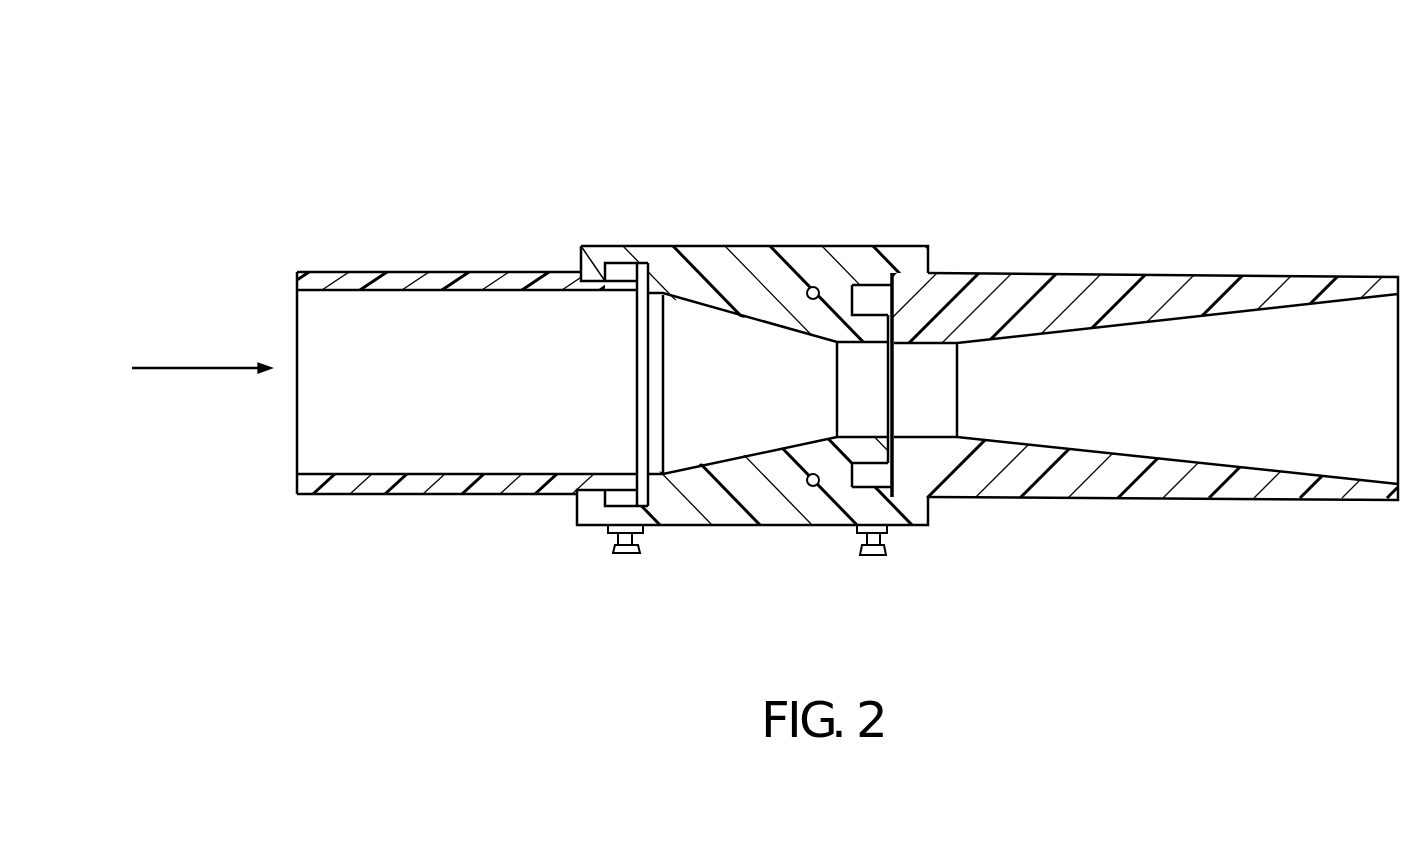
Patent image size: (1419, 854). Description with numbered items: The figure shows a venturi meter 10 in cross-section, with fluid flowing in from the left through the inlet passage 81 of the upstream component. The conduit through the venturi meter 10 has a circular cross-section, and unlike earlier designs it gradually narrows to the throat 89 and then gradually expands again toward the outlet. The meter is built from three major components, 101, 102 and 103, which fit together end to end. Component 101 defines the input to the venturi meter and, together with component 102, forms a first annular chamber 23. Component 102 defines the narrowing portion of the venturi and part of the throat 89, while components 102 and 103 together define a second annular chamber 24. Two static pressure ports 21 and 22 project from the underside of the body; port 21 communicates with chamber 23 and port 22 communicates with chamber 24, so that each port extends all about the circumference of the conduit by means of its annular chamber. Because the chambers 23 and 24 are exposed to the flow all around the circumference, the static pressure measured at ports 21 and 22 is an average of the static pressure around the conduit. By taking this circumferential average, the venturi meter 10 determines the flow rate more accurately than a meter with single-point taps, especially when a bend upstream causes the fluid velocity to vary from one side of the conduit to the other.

The venturi meter 10 is at (488, 76).
The first major component 101 is at (388, 270).
The second major component 102 is at (772, 246).
The third major component 103 is at (1092, 275).
The first annular chamber 23 is at (622, 268).
The second annular chamber 24 is at (874, 298).
The inlet flow passage 81 is at (374, 385).
The throat 89 is at (878, 395).
The first static pressure port 21 is at (633, 555).
The second static pressure port 22 is at (862, 555).